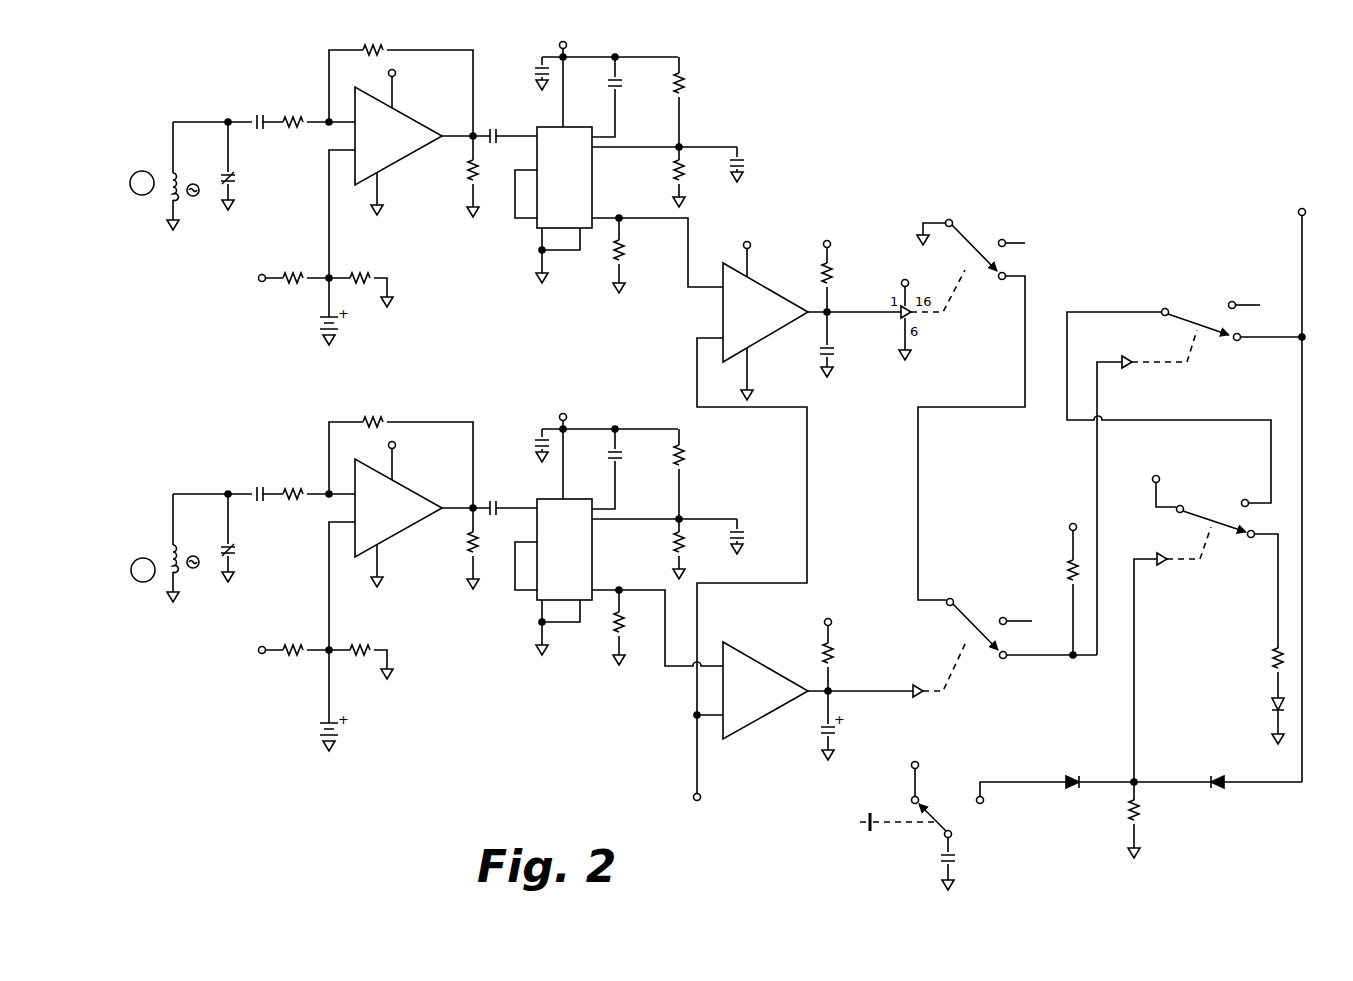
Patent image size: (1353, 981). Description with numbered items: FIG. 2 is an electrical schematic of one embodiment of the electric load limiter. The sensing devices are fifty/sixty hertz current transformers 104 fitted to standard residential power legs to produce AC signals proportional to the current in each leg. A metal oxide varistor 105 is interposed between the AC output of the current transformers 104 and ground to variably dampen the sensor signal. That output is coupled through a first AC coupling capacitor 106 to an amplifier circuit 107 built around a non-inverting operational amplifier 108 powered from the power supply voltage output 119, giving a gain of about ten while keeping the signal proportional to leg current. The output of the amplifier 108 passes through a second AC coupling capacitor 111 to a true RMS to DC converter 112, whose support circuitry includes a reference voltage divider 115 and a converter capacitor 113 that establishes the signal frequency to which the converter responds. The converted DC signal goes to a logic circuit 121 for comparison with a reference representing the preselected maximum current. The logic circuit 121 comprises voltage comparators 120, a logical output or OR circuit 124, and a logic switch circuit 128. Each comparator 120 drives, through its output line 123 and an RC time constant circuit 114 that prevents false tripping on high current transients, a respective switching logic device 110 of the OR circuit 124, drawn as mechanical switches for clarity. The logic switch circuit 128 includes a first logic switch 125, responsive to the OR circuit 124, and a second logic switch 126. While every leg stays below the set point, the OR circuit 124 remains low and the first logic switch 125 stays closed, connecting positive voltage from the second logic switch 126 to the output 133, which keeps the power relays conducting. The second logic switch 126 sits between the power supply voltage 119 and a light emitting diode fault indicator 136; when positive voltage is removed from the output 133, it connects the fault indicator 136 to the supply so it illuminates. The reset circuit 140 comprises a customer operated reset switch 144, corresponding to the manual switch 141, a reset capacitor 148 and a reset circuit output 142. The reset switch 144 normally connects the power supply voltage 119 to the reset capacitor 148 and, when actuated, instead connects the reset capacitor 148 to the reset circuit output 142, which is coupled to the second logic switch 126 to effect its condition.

The current transformers 104 is at (170, 152).
The metal oxide varistor 105 is at (237, 180).
The first AC coupling capacitor 106 is at (259, 112).
The amplifier circuit 107 is at (390, 310).
The amplifier 108 is at (415, 155).
The switching logic devices 110 is at (970, 250).
The second AC coupling capacitor 111 is at (495, 127).
The true RMS to DC converter 112 is at (532, 232).
The converter capacitor 113 is at (620, 82).
The RC time constant circuit 114 is at (845, 336).
The reference voltage divider 115 is at (682, 140).
The power supply voltage output 119 is at (261, 283).
The voltage comparator 120 is at (770, 285).
The logic circuit 121 is at (1166, 214).
The comparator output line 123 is at (862, 310).
The OR circuit 124 is at (970, 290).
The first logic switch 125 is at (1198, 327).
The second logic switch 126 is at (1208, 540).
The logic switch circuit 128 is at (1267, 371).
The output 133 is at (1302, 208).
The light emitting diode fault indicator 136 is at (1272, 708).
The reset circuit 140 is at (993, 831).
The manual switch 141 is at (868, 830).
The reset circuit output 142 is at (1187, 778).
The reset switch 144 is at (935, 826).
The reset capacitor 148 is at (955, 857).